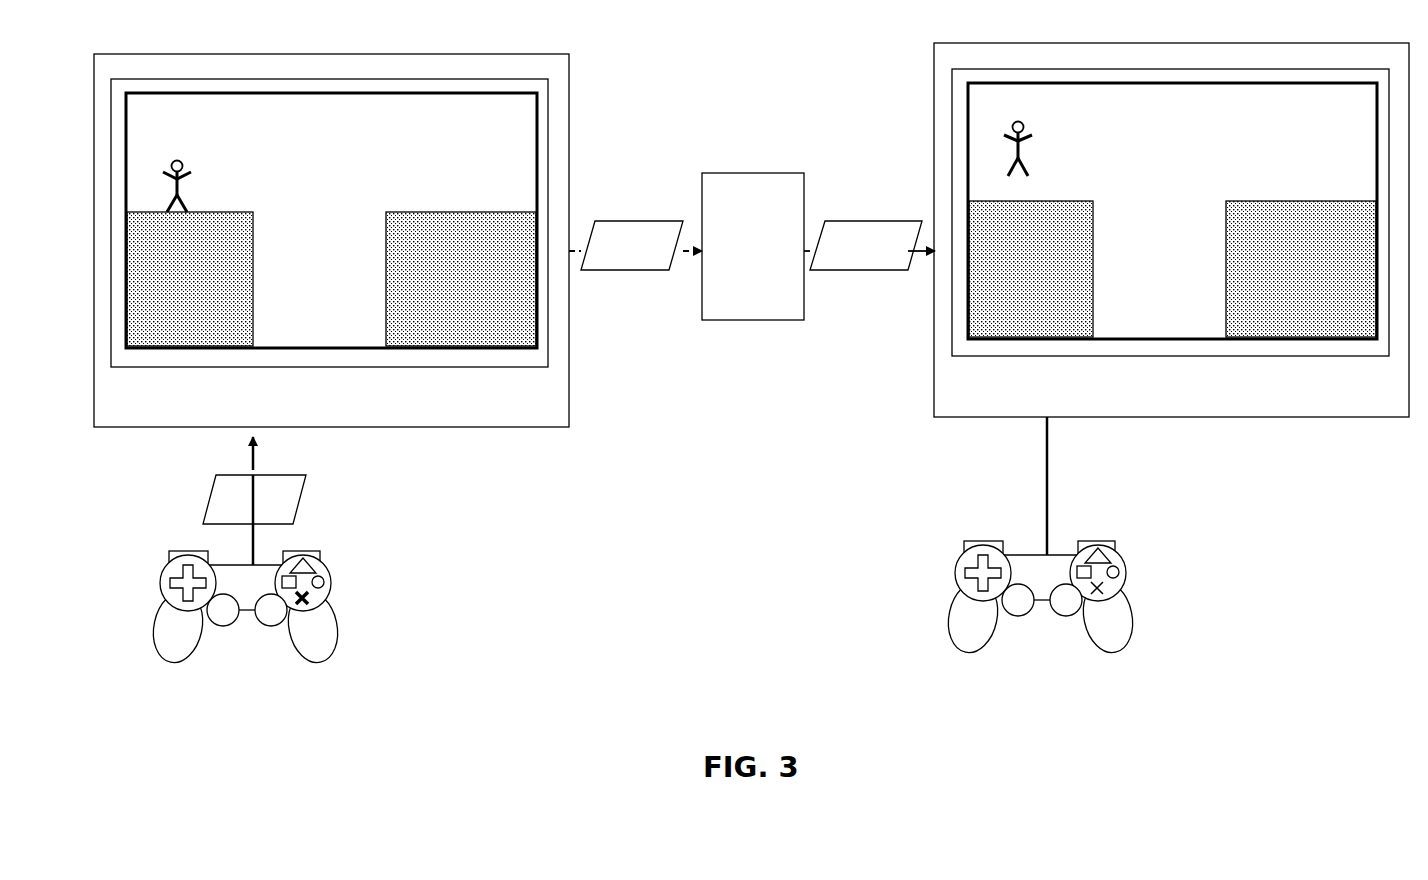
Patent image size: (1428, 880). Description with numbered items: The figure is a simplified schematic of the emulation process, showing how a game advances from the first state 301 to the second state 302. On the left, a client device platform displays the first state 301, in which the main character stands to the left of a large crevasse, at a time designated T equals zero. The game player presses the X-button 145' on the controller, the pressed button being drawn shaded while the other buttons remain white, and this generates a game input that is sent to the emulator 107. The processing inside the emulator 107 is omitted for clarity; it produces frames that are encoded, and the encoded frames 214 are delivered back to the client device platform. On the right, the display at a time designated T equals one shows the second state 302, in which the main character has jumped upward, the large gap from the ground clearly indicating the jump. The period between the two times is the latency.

The first state 301 is at (331, 220).
The second state 302 is at (1172, 211).
The emulator 107 is at (741, 172).
The encoded frames 214 is at (880, 271).
The X-button 145' is at (349, 604).